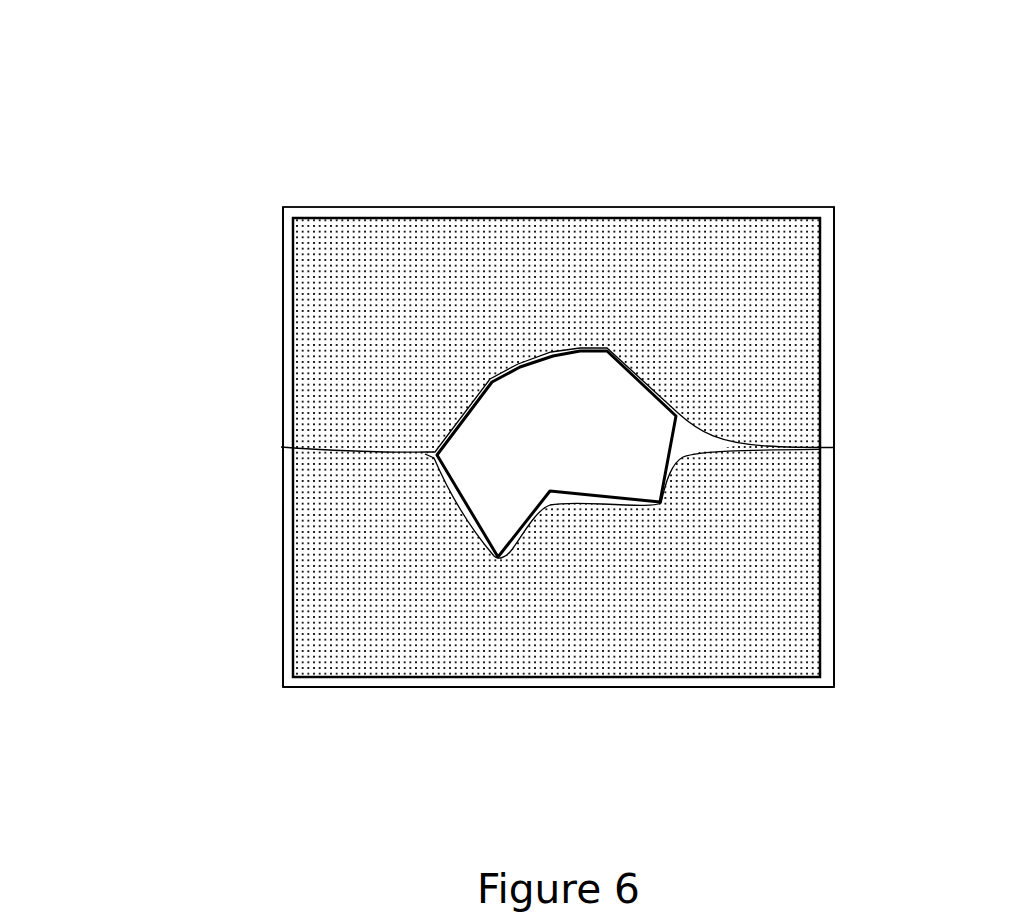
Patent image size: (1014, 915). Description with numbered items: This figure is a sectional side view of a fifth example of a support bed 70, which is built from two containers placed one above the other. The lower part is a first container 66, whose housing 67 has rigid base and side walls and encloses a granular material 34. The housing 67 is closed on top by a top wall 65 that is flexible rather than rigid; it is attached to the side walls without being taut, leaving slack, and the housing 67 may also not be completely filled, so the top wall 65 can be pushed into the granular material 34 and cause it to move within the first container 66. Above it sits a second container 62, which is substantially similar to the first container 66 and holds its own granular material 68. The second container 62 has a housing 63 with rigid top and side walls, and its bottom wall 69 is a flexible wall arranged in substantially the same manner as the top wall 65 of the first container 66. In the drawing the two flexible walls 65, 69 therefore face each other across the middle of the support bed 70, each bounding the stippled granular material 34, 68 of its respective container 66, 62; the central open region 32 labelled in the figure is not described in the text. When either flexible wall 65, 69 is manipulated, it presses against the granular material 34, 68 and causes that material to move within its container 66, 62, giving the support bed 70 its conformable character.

The support bed 70 is at (118, 80).
The second container 62 is at (275, 257).
The housing 63 is at (829, 295).
The first container 66 is at (272, 572).
The housing 67 is at (456, 683).
The granular material 68 is at (725, 258).
The granular material 34 is at (685, 643).
The cavity 32 is at (575, 443).
The top wall 65 is at (425, 454).
The bottom wall 69 is at (733, 438).